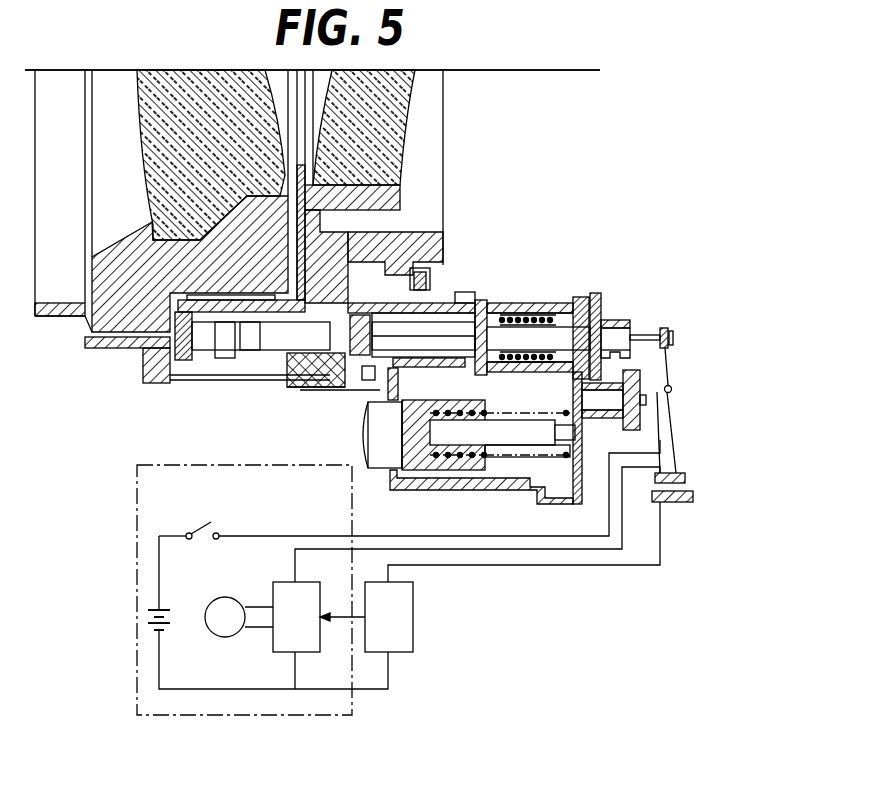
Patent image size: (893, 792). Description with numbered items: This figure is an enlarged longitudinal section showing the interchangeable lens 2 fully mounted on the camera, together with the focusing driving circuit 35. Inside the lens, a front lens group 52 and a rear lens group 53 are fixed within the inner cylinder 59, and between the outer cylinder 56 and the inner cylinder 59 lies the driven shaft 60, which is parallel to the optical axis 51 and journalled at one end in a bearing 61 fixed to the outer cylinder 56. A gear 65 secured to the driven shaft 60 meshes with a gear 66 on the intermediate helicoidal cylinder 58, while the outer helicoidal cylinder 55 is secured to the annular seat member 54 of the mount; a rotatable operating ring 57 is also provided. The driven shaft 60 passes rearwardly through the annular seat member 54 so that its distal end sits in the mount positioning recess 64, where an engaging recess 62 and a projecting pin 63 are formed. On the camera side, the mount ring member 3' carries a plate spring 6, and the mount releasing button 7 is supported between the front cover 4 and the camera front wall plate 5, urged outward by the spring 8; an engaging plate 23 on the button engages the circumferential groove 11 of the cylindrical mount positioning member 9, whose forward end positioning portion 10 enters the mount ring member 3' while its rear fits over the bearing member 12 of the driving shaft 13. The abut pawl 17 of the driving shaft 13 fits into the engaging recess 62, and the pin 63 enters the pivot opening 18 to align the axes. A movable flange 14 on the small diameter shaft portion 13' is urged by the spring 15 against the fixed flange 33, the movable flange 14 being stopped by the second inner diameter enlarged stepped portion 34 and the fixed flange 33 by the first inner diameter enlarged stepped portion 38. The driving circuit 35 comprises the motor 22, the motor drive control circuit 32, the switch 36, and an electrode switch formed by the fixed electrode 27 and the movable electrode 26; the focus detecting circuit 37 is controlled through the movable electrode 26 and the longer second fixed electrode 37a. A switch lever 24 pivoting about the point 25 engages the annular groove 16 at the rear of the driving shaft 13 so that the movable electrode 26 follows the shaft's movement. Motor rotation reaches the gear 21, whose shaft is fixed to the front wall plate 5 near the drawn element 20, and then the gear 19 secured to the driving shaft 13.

The interchangeable lens 2 is at (63, 327).
The mount ring member 3' is at (475, 266).
The front cover 4 is at (392, 477).
The camera front wall plate 5 is at (582, 478).
The plate spring 6 is at (438, 273).
The mount releasing button 7 is at (383, 458).
The spring 8 is at (492, 455).
The mount positioning member 9 is at (394, 368).
The forward end positioning portion 10 is at (371, 362).
The circumferential groove 11 is at (465, 302).
The bearing member 12 is at (566, 338).
The driving shaft 13 is at (429, 338).
The small diameter shaft portion 13' is at (598, 310).
The movable flange 14 is at (520, 312).
The spring 15 is at (533, 313).
The annular groove 16 is at (665, 328).
The abut pawl 17 is at (380, 328).
The pivot opening 18 is at (423, 339).
The gear 19 is at (602, 300).
The cam shaft 20 is at (607, 397).
The gear 21 is at (640, 420).
The motor 22 is at (227, 636).
The engaging plate 23 is at (470, 386).
The switch lever 24 is at (670, 368).
The pivot point 25 is at (672, 389).
The movable electrode 26 is at (680, 478).
The fixed electrode 27 is at (650, 492).
The motor drive control circuit 32 is at (302, 652).
The fixed flange 33 is at (493, 310).
The second inner diameter enlarged stepped portion 34 is at (527, 422).
The driving circuit 35 is at (135, 528).
The switch 36 is at (205, 525).
The focus detecting circuit 37 is at (413, 642).
The second fixed electrode 37a is at (670, 502).
The first inner diameter enlarged stepped portion 38 is at (467, 381).
The optical axis 51 is at (512, 72).
The front lens group 52 is at (160, 117).
The rear lens group 53 is at (390, 128).
The annular seat member 54 is at (418, 238).
The outer helicoidal cylinder 55 is at (323, 308).
The outer cylinder 56 is at (152, 357).
The operating ring 57 is at (312, 392).
The intermediate helicoidal cylinder 58 is at (265, 292).
The inner cylinder 59 is at (127, 252).
The driven shaft 60 is at (255, 345).
The bearing 61 is at (215, 372).
The engaging recess 62 is at (318, 388).
The projecting pin 63 is at (293, 383).
The mount positioning recess 64 is at (374, 383).
The gear 65 is at (183, 362).
The gear 66 is at (105, 340).